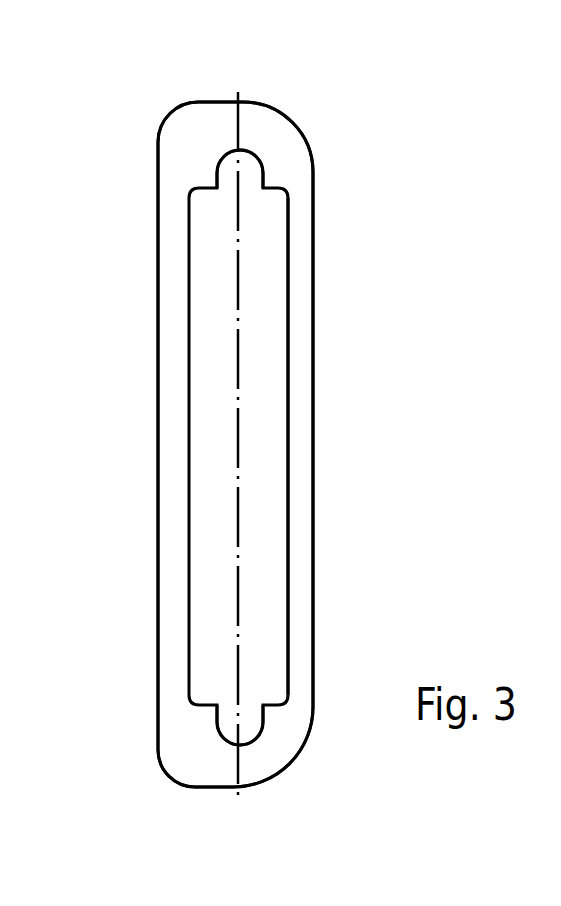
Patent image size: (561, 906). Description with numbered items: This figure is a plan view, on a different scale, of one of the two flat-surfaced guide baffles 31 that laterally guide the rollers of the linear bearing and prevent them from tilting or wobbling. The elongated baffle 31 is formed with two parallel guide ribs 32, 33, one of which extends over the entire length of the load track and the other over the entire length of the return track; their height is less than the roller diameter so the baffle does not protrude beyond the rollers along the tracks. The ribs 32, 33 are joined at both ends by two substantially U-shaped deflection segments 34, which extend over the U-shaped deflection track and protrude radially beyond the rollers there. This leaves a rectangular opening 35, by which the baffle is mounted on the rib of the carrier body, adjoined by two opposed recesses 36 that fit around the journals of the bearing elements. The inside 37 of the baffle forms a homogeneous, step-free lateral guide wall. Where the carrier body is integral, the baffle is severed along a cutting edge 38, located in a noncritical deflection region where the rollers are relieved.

The baffle 31 is at (283, 157).
The guide rib 32 is at (313, 385).
The guide rib 33 is at (170, 378).
The deflection segment 34 is at (207, 112).
The rectangular opening 35 is at (270, 312).
The recess 36 is at (247, 163).
The inside 37 is at (300, 492).
The cutting edge 38 is at (245, 122).